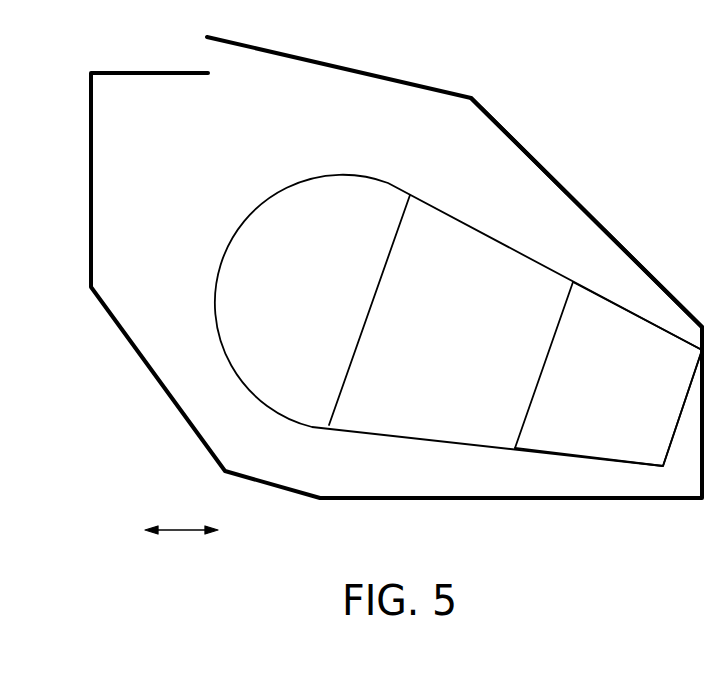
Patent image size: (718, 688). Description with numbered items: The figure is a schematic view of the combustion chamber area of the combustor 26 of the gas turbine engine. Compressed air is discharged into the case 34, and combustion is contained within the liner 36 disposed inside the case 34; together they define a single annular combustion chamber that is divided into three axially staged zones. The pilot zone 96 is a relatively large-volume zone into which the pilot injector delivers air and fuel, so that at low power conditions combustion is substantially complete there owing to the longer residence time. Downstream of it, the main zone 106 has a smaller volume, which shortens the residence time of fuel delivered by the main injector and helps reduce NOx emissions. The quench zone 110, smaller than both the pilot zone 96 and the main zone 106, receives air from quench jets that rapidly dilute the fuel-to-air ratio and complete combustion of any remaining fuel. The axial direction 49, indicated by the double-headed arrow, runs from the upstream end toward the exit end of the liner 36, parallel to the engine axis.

The combustor 26 is at (396, 267).
The case 34 is at (491, 114).
The liner 36 is at (492, 238).
The pilot zone 96 is at (256, 296).
The main zone 106 is at (473, 338).
The quench zone 110 is at (618, 398).
The axial direction 49 is at (178, 531).